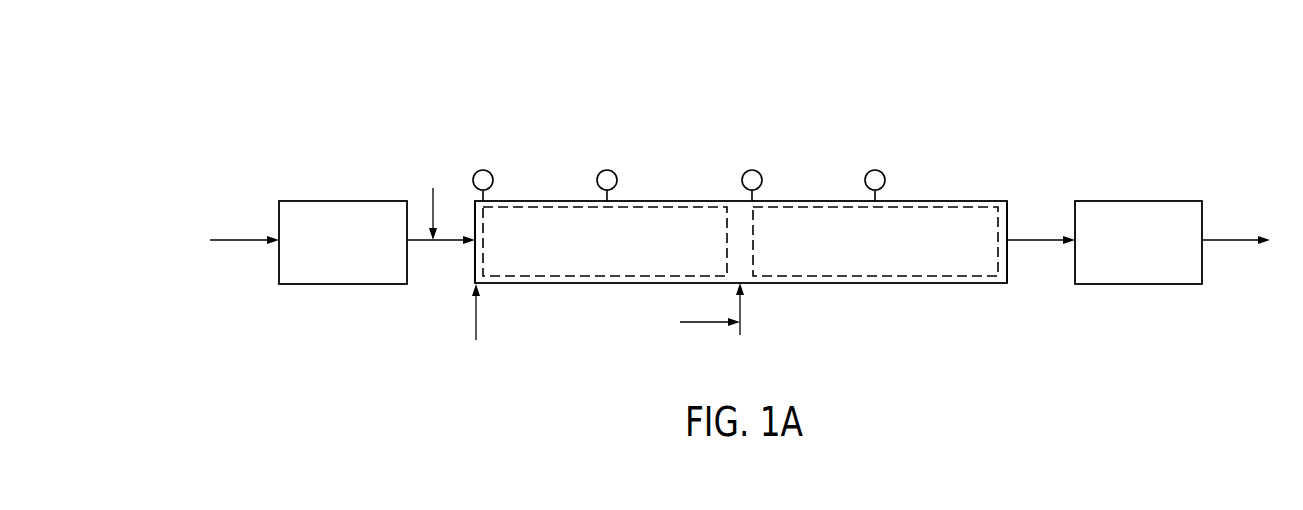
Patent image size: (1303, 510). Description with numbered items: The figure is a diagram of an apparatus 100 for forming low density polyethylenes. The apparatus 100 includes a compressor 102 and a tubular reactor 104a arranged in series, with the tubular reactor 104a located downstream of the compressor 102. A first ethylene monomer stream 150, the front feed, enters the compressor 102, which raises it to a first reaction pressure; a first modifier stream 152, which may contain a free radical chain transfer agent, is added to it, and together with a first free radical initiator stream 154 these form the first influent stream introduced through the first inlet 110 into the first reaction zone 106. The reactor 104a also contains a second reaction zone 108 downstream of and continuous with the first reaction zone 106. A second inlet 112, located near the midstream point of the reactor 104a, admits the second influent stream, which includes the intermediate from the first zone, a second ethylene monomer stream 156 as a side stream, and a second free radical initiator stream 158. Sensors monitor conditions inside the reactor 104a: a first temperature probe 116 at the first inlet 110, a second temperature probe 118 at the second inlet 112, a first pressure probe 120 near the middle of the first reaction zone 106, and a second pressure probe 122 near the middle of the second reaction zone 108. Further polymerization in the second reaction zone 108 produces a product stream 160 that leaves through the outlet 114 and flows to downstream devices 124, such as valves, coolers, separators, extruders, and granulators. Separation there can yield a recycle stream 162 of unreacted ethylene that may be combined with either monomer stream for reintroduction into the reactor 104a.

The apparatus 100 is at (1159, 99).
The compressor 102 is at (362, 257).
The tubular reactor 104a is at (962, 180).
The first reaction zone 106 is at (622, 256).
The second reaction zone 108 is at (902, 256).
The first inlet 110 is at (480, 263).
The second inlet 112 is at (741, 220).
The outlet 114 is at (1003, 213).
The first temperature probe 116 is at (490, 172).
The second temperature probe 118 is at (759, 173).
The first pressure probe 120 is at (613, 172).
The second pressure probe 122 is at (882, 173).
The downstream devices 124 is at (1157, 256).
The first ethylene monomer stream 150 is at (226, 242).
The first modifier stream 152 is at (441, 203).
The first free radical initiator stream 154 is at (476, 324).
The second ethylene monomer stream 156 is at (741, 324).
The second free radical initiator stream 158 is at (693, 322).
The product stream 160 is at (1036, 243).
The recycle stream 162 is at (1233, 244).